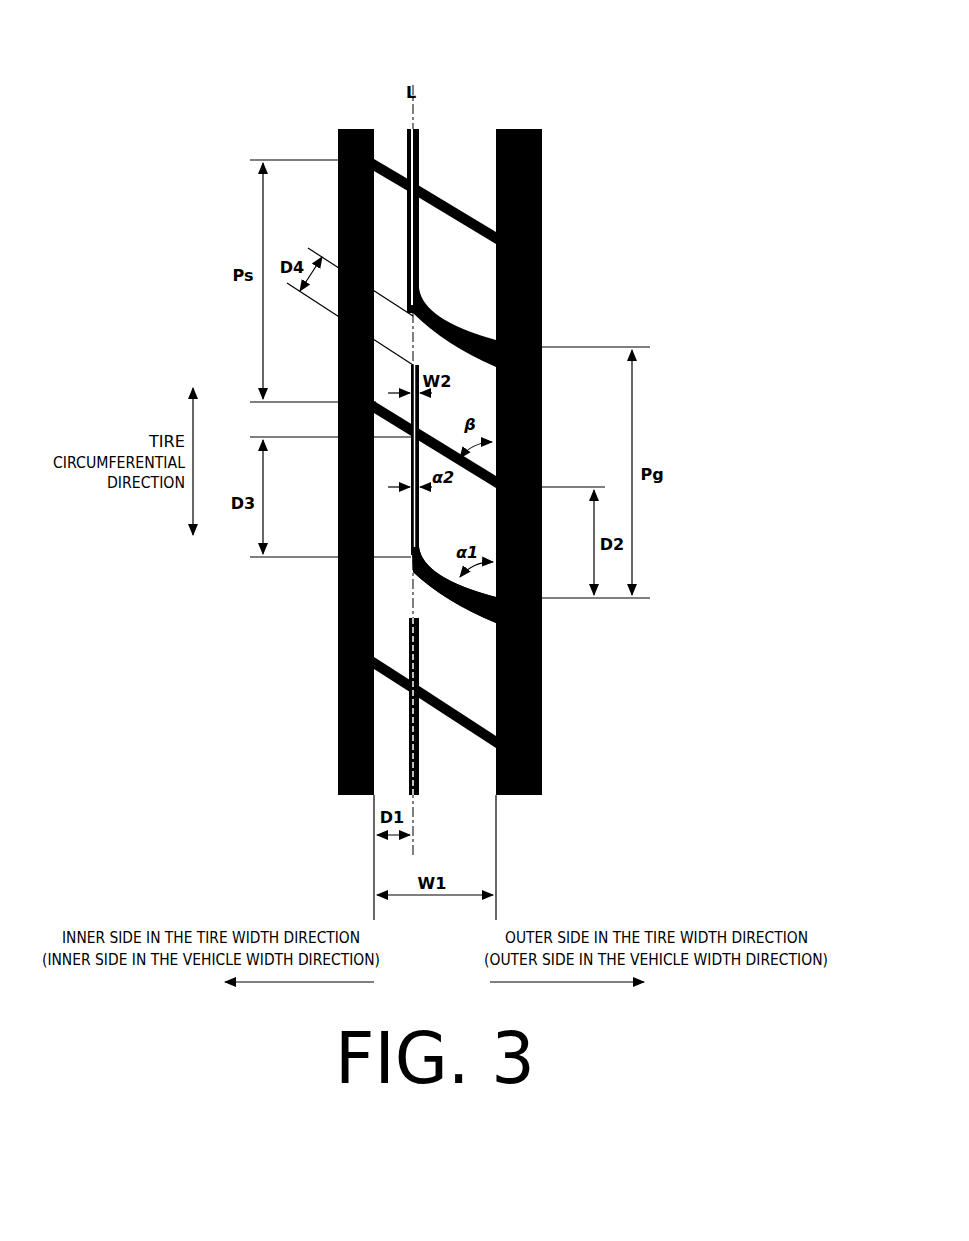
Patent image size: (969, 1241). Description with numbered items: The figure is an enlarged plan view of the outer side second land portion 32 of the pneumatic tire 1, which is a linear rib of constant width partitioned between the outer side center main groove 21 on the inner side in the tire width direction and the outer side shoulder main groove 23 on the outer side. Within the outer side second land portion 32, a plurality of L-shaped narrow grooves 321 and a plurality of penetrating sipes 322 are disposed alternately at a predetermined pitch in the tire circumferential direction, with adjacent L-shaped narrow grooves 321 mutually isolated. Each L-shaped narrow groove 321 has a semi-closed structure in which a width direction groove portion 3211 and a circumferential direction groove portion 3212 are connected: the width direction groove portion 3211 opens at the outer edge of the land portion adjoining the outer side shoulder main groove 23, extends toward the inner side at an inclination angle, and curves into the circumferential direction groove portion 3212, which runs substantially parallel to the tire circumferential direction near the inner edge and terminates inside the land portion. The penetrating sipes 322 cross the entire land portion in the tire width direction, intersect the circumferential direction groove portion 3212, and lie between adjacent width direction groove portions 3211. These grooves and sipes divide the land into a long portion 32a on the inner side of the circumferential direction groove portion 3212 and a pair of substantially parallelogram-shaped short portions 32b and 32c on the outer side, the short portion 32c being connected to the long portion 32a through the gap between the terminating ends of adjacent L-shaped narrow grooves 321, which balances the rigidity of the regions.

The pneumatic tire 1 is at (550, 58).
The outer side center main groove 21 is at (360, 128).
The outer side shoulder main groove 23 is at (528, 128).
The outer side second land portion 32 is at (441, 407).
The long portion 32a is at (380, 212).
The short portion 32b is at (480, 275).
The short portion 32c is at (475, 405).
The L-shaped narrow groove 321 is at (420, 128).
The penetrating sipe 322 is at (441, 448).
The width direction groove portion 3211 is at (440, 566).
The circumferential direction groove portion 3212 is at (421, 512).